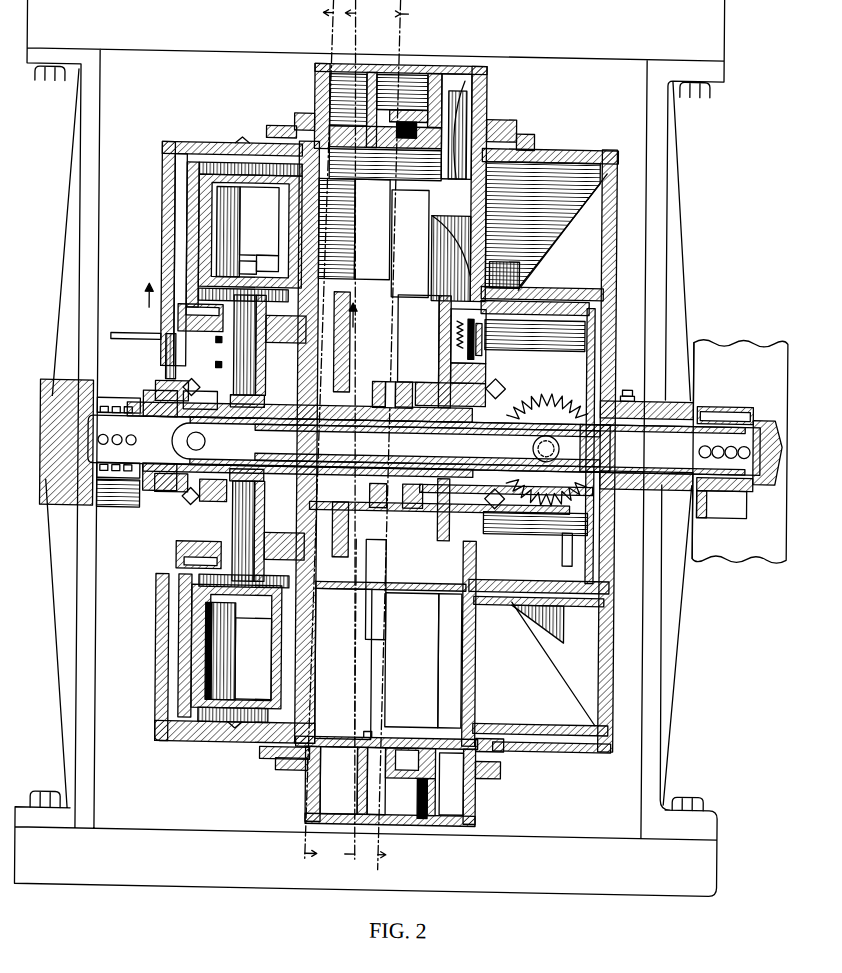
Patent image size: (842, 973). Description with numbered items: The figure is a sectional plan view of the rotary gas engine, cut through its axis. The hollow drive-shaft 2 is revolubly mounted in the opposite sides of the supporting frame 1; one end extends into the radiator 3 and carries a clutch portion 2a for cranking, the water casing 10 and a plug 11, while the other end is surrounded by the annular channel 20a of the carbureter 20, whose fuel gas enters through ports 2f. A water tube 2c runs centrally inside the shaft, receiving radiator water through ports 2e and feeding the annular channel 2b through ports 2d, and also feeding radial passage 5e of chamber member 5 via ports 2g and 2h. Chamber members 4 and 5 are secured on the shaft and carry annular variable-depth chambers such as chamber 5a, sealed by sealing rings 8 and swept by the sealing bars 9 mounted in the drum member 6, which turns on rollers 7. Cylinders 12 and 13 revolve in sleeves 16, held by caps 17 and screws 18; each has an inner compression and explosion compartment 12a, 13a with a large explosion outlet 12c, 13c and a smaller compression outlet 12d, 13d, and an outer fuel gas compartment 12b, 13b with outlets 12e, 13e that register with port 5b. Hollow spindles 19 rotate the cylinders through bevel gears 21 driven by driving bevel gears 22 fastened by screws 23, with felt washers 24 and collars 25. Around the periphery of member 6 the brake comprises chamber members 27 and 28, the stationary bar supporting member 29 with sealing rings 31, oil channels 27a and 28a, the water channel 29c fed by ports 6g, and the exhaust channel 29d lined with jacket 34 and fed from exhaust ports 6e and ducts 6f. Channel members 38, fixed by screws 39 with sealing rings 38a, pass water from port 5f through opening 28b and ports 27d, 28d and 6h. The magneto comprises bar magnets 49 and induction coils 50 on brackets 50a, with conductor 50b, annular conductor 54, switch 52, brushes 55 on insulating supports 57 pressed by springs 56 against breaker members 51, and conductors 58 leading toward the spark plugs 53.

The supporting frame 1 is at (80, 138).
The drive-shaft 2 is at (35, 412).
The clutch portion 2a is at (764, 414).
The annular channel 2b is at (425, 467).
The water tube 2c is at (524, 448).
The ports 2d is at (440, 426).
The ports 2e is at (711, 456).
The ports 2f is at (125, 435).
The port 2g is at (205, 445).
The port 2h is at (594, 448).
The radiator 3 is at (736, 337).
The chamber member 4 is at (160, 170).
The chamber member 5 is at (615, 221).
The chamber 5a is at (598, 205).
The port 5b is at (590, 693).
The radial passage 5e is at (598, 330).
The port 5f is at (505, 178).
The drum member 6 is at (331, 688).
The exhaust ports 6e is at (451, 252).
The ducts 6f is at (460, 262).
The ports 6g is at (344, 638).
The ports 6h is at (440, 664).
The rollers 7 is at (339, 446).
The sealing rings 8 is at (490, 168).
The sealing bars 9 is at (401, 439).
The water casing 10 is at (720, 401).
The plug 11 is at (755, 512).
The cylinder 12 is at (197, 200).
The compression and explosion compartment 12a is at (215, 212).
The fuel gas compartment 12b is at (195, 227).
The explosion outlet 12c is at (243, 231).
The compression outlet 12d is at (272, 262).
The outlet 12e is at (278, 190).
The cylinder 13 is at (193, 640).
The compression and explosion compartment 13a is at (250, 620).
The fuel gas compartment 13b is at (192, 658).
The explosion outlet 13c is at (195, 628).
The compression outlet 13d is at (200, 612).
The outlet 13e is at (172, 713).
The sleeves 16 is at (185, 185).
The caps 17 is at (212, 146).
The screws 18 is at (168, 146).
The hollow spindles 19 is at (204, 534).
The carbureter 20 is at (118, 512).
The annular channel 20a is at (130, 512).
The bevel gears 21 is at (545, 392).
The driving bevel gears 22 is at (497, 383).
The screws 23 is at (385, 343).
The felt washers 24 is at (385, 374).
The collars 25 is at (215, 343).
The chamber member 27 is at (312, 85).
The annular oil channel 27a is at (350, 221).
The ports 27d is at (380, 190).
The chamber member 28 is at (484, 76).
The annular oil channel 28a is at (370, 140).
The opening 28b is at (517, 130).
The ports 28d is at (447, 198).
The reciprocating bar supporting member 29 is at (380, 70).
The annular channel 29c is at (430, 73).
The annular channel 29d is at (458, 80).
The sealing rings 31 is at (360, 70).
The non-heat-conducting jacket 34 is at (400, 748).
The channel members 38 is at (282, 116).
The sealing rings 38a is at (492, 118).
The screws 39 is at (532, 135).
The bar magnets 49 is at (456, 324).
The induction coils 50 is at (467, 338).
The brackets 50a is at (536, 428).
The conductor 50b is at (452, 448).
The breaker members 51 is at (215, 368).
The switch 52 is at (135, 336).
The spark plugs 53 is at (246, 266).
The annular electrical conductor 54 is at (165, 340).
The brushes 55 is at (270, 438).
The springs 56 is at (301, 444).
The insulating supports 57 is at (323, 439).
The conductors 58 is at (444, 552).